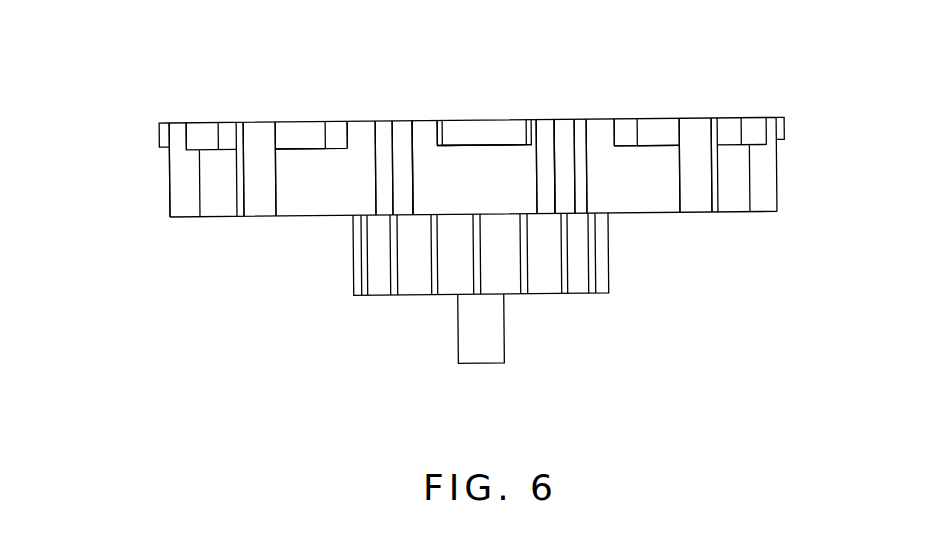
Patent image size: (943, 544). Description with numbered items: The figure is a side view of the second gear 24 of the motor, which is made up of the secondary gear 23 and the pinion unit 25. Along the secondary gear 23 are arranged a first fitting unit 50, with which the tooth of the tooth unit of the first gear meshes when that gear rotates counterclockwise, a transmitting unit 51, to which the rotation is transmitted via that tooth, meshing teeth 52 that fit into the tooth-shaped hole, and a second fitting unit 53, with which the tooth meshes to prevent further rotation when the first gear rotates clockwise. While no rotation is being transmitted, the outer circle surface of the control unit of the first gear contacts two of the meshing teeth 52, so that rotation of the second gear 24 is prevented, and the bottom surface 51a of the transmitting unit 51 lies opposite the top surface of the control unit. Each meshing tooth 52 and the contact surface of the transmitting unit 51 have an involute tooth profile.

The secondary gear 23 is at (160, 193).
The second gear 24 is at (724, 100).
The pinion unit 25 is at (422, 278).
The first fitting unit 50 is at (360, 133).
The transmitting unit 51 is at (302, 132).
The bottom surface of the transmitting unit 51a is at (490, 160).
The meshing tooth 52 is at (183, 138).
The second fitting unit 53 is at (418, 136).